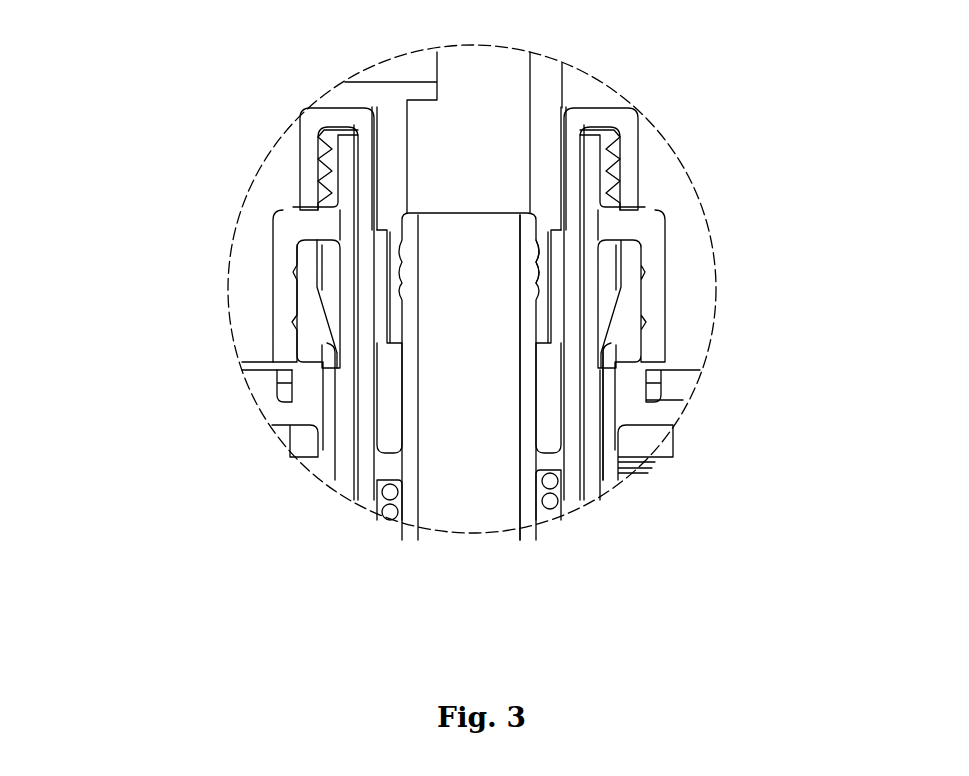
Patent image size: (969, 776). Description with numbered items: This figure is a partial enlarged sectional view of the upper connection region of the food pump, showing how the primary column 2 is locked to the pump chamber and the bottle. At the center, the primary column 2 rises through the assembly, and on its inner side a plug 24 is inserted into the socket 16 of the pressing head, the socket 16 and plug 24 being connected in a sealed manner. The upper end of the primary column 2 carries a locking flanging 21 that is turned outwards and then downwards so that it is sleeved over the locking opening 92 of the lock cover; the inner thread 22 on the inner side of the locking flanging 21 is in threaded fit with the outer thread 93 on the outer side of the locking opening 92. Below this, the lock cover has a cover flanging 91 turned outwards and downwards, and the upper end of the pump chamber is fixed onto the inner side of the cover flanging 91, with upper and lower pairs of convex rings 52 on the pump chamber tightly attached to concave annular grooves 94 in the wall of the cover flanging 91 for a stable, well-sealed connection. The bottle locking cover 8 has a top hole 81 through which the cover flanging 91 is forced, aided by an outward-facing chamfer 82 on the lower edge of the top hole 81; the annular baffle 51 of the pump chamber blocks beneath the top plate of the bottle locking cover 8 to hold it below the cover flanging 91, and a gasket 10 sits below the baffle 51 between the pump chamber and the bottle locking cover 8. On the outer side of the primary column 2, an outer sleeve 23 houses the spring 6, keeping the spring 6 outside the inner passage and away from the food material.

The primary column 2 is at (527, 510).
The spring 6 is at (550, 510).
The bottle locking cover 8 is at (262, 376).
The gasket 10 is at (647, 445).
The socket 16 is at (540, 283).
The locking flanging 21 is at (316, 167).
The inner thread 22 is at (322, 140).
The outer sleeve 23 is at (570, 507).
The plug 24 is at (522, 320).
The annular baffle 51 is at (670, 412).
The convex ring 52 is at (297, 275).
The top hole 81 is at (278, 432).
The outward-facing chamfer 82 is at (276, 395).
The cover flanging 91 is at (650, 293).
The locking opening 92 is at (590, 188).
The outer thread 93 is at (603, 168).
The annular groove 94 is at (295, 272).